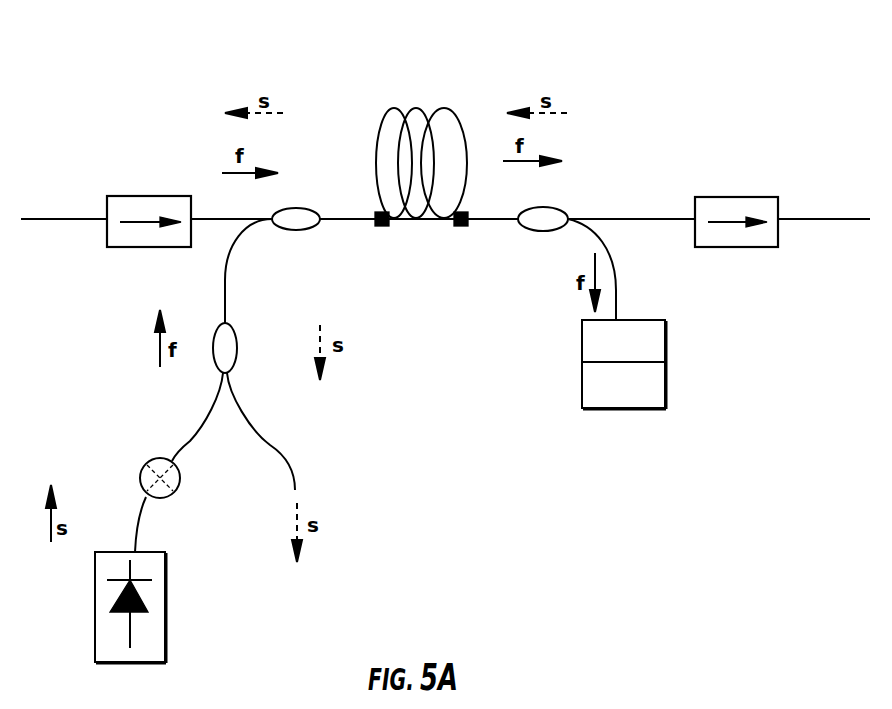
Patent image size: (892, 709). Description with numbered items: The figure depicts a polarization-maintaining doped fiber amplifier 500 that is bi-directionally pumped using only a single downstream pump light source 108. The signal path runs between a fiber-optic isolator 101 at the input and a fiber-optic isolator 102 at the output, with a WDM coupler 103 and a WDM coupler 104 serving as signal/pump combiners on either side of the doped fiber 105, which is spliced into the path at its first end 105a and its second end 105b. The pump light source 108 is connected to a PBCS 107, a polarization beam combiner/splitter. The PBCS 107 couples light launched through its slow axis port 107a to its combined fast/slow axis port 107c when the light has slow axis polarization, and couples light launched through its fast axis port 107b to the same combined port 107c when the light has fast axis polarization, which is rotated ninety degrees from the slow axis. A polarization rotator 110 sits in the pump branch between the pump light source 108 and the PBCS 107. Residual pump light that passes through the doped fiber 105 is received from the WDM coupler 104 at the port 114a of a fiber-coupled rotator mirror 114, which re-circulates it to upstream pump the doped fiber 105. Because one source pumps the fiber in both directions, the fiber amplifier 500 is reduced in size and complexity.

The fiber amplifier 500 is at (716, 100).
The fiber-optic isolator 101 is at (140, 247).
The fiber-optic isolator 102 is at (728, 247).
The WDM coupler 103 is at (296, 230).
The WDM coupler 104 is at (543, 231).
The doped fiber 105 is at (422, 221).
The first end of the doped fiber 105a is at (376, 211).
The second end of the doped fiber 105b is at (466, 211).
The PBCS 107 is at (213, 348).
The slow axis port of the PBCS 107a is at (274, 447).
The fast axis port of the PBCS 107b is at (190, 441).
The combined fast/slow axis port of the PBCS 107c is at (226, 290).
The polarization rotator 110 is at (180, 478).
The pump light source 108 is at (140, 662).
The fiber-coupled rotator mirror 114 is at (665, 372).
The port of the fiber-coupled rotator mirror 114a is at (618, 308).